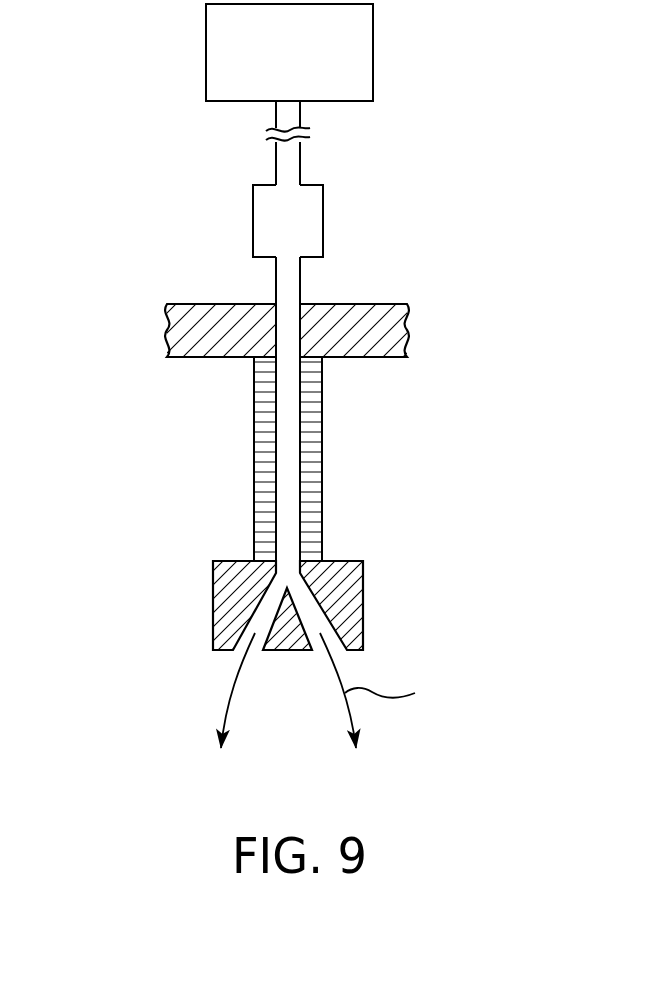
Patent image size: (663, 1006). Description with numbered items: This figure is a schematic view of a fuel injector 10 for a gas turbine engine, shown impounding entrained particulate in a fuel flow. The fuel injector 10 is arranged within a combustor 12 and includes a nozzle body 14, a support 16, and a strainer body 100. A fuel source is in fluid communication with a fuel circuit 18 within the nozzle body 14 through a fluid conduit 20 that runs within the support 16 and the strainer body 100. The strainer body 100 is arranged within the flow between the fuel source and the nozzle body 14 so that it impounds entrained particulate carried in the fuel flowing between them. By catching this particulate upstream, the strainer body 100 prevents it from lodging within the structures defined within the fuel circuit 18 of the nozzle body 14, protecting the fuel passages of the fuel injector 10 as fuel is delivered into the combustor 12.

The strainer body 100 is at (266, 421).
The fuel injector 10 is at (266, 470).
The combustor 12 is at (207, 352).
The nozzle body 14 is at (228, 593).
The support 16 is at (265, 499).
The fuel circuit 18 is at (305, 602).
The fluid conduit 20 is at (288, 450).